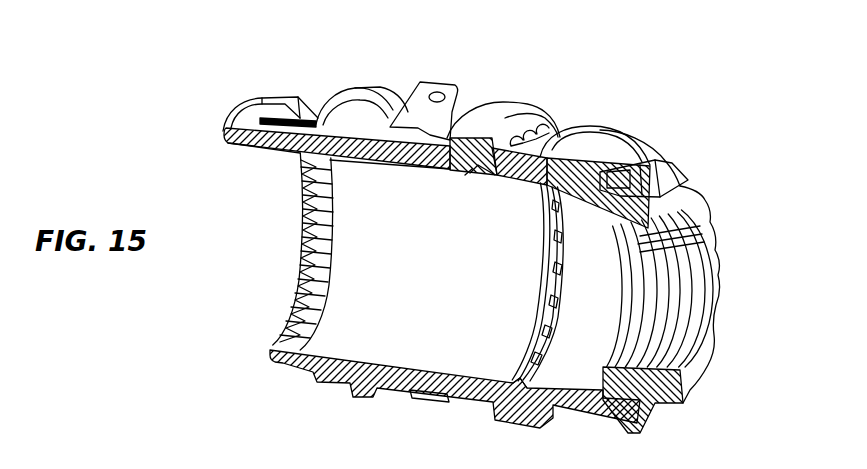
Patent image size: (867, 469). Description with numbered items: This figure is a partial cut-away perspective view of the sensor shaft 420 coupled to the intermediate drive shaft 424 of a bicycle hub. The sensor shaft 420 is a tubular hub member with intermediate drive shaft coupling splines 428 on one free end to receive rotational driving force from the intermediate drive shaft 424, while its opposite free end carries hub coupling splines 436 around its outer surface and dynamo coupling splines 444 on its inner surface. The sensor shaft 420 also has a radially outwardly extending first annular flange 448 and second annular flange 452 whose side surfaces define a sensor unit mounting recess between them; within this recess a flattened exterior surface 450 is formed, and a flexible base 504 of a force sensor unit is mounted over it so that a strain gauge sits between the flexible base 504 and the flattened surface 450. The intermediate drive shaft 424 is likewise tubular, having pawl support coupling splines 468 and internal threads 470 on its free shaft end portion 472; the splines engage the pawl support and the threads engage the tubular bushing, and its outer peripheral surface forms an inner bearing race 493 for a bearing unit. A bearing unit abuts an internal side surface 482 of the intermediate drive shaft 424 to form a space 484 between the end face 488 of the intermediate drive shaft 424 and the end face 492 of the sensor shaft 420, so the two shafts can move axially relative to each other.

The sensor shaft 420 is at (205, 52).
The intermediate drive shaft 424 is at (650, 112).
The intermediate drive shaft coupling splines 428 is at (520, 140).
The hub coupling splines 436 is at (312, 100).
The dynamo coupling splines 444 is at (312, 224).
The first annular flange 448 is at (355, 88).
The flattened exterior surface 450 is at (385, 150).
The second annular flange 452 is at (494, 102).
The pawl support coupling splines 468 is at (687, 176).
The internal threads 470 is at (685, 282).
The free shaft end portion 472 is at (726, 214).
The internal side surface 482 is at (566, 200).
The space 484 is at (477, 168).
The end face 488 is at (475, 172).
The end face 492 is at (465, 176).
The inner bearing race 493 is at (578, 128).
The flexible base 504 is at (437, 82).